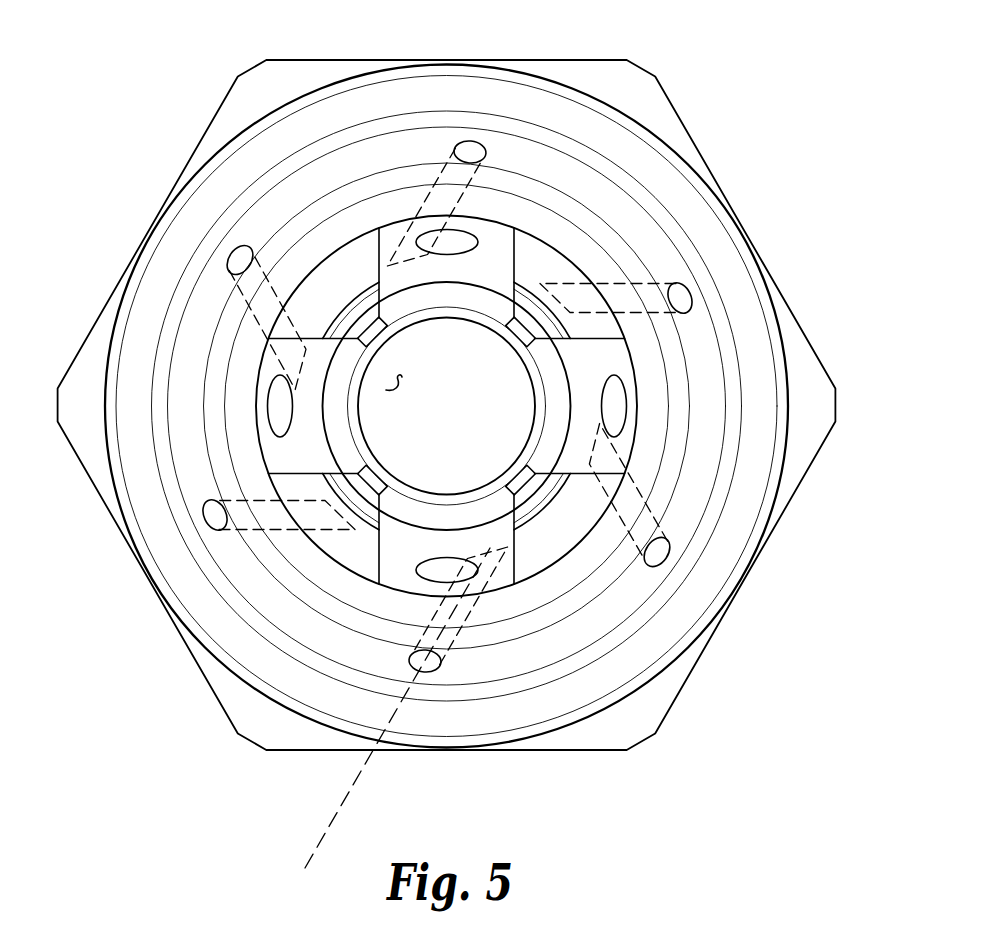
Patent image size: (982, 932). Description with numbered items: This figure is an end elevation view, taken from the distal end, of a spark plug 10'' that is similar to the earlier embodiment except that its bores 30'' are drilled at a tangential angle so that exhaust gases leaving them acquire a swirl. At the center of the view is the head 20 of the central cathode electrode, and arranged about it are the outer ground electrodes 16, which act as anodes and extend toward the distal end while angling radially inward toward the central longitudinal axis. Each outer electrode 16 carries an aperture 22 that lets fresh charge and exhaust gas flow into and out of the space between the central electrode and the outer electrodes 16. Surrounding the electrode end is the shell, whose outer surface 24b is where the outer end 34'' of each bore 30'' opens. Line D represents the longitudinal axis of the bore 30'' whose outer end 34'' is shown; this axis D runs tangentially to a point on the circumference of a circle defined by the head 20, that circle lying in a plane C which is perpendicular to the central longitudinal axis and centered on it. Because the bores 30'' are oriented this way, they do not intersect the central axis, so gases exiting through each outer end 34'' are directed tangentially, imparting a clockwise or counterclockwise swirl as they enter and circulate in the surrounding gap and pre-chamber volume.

The spark plug 10'' is at (476, 406).
The outer ground electrodes 16 is at (378, 548).
The head 20 is at (457, 400).
The aperture 22 is at (277, 423).
The outer surface of the shell 24b is at (263, 752).
The bores 30'' is at (460, 402).
The outer end 34'' is at (447, 486).
The plane C is at (387, 388).
The longitudinal axis of the bore D is at (386, 708).